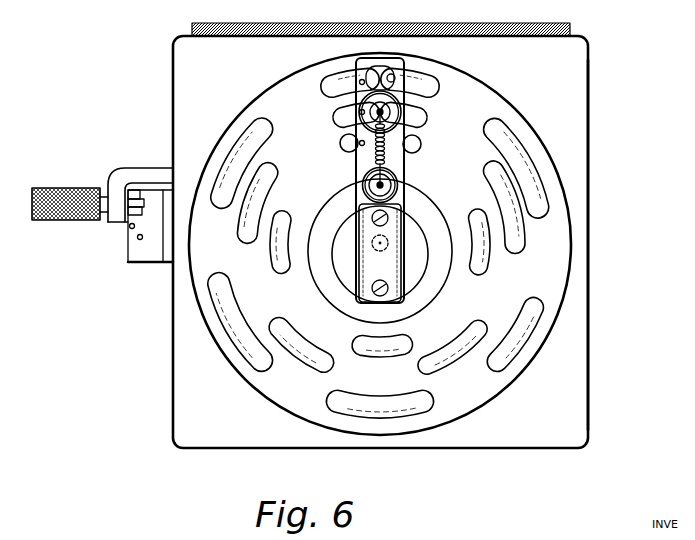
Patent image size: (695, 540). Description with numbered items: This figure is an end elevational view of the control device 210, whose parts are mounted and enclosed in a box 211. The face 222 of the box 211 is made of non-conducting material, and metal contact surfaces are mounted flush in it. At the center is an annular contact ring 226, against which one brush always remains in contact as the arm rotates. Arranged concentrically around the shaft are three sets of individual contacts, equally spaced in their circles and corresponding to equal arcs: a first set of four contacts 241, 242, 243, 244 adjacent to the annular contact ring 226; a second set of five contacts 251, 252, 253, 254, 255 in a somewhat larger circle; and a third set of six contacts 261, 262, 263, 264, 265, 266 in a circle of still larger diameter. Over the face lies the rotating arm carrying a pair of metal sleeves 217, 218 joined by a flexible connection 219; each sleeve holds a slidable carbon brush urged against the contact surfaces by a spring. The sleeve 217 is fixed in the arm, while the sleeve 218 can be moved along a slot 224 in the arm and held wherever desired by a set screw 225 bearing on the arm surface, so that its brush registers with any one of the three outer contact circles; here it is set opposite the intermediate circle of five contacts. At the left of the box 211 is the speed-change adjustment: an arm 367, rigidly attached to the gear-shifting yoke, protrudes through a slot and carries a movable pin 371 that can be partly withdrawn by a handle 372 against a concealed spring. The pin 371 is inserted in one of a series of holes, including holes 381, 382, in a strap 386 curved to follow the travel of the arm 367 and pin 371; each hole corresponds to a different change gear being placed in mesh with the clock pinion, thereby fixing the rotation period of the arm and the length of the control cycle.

The control device 210 is at (232, 78).
The box 211 is at (591, 232).
The metal sleeve 217 is at (377, 185).
The metal sleeve 218 is at (407, 105).
The flexible connection 219 is at (387, 150).
The face 222 is at (493, 102).
The slot 224 is at (398, 67).
The set screw 225 is at (341, 140).
The annular contact ring 226 is at (326, 274).
The contact 241 is at (418, 147).
The contact 242 is at (269, 255).
The contact 243 is at (360, 337).
The contact 244 is at (478, 273).
The contact 251 is at (336, 114).
The contact 252 is at (243, 238).
The contact 253 is at (338, 366).
The contact 254 is at (463, 352).
The contact 255 is at (503, 198).
The contact 261 is at (325, 86).
The contact 262 is at (218, 204).
The contact 263 is at (269, 367).
The contact 264 is at (424, 403).
The contact 265 is at (530, 301).
The contact 266 is at (433, 100).
The arm 367 is at (137, 170).
The movable pin 371 is at (127, 223).
The handle 372 is at (61, 187).
The hole 381 is at (138, 240).
The hole 382 is at (130, 229).
The strap 386 is at (133, 264).